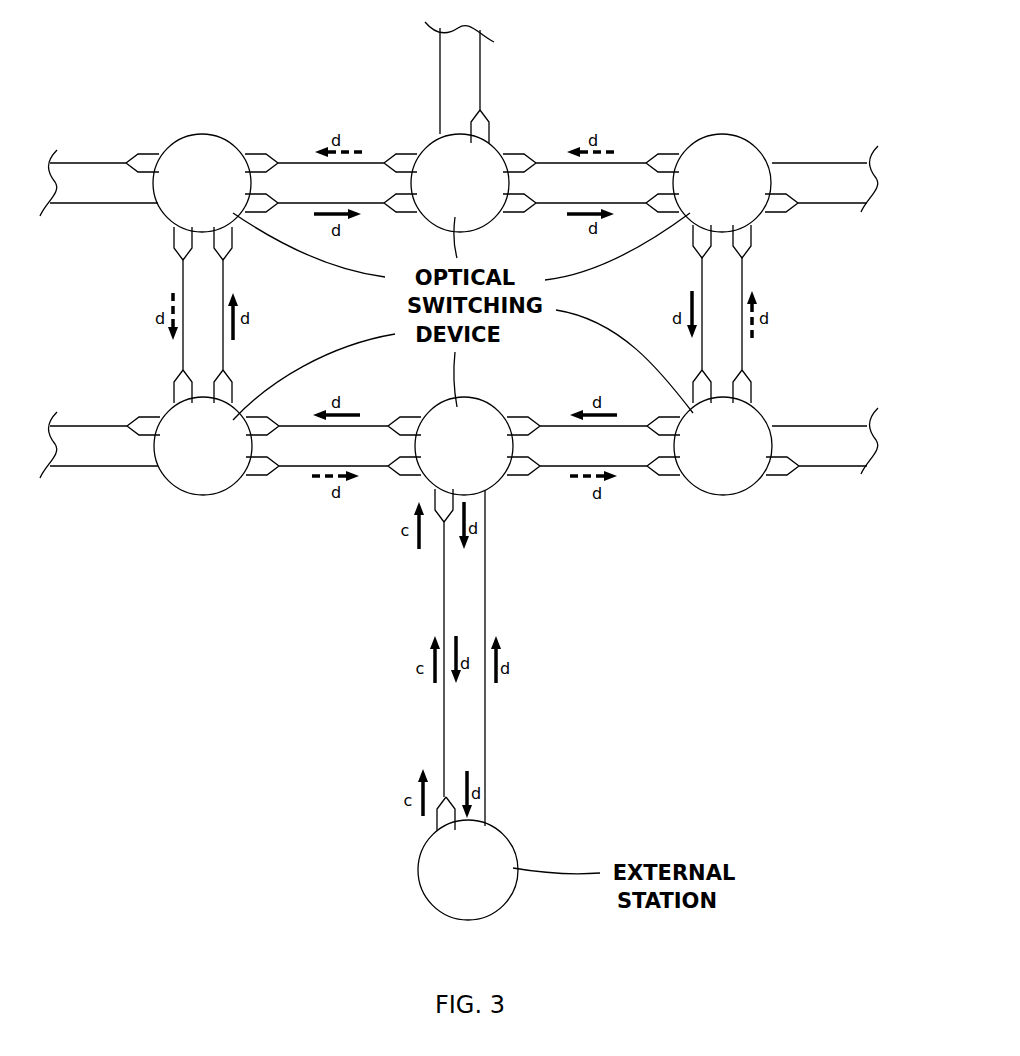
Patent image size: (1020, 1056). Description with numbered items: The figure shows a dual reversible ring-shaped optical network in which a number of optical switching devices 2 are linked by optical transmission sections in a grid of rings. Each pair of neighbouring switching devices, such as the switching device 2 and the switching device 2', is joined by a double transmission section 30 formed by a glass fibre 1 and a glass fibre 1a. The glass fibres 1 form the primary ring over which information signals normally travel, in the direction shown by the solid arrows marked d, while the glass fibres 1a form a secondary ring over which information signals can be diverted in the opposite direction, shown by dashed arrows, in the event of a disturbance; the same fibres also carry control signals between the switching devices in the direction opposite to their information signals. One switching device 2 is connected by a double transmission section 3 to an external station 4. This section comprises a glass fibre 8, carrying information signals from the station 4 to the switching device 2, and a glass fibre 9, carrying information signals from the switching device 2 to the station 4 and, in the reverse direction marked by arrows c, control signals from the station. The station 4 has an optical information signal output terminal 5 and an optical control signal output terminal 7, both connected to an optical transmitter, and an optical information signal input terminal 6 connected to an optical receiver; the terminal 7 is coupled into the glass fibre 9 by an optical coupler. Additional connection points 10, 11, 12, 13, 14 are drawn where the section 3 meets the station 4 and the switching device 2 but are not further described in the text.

The glass fibre 1 is at (363, 207).
The glass fibre 1a is at (361, 163).
The optical switching device 2 is at (462, 314).
The optical switching device 2' is at (723, 446).
The double transmission section 3 is at (465, 658).
The external station 4 is at (468, 870).
The optical information signal output terminal 5 is at (490, 823).
The optical information signal input terminal 6 is at (458, 818).
The optical control signal output terminal 7 is at (438, 829).
The glass fibre 8 is at (490, 725).
The glass fibre 9 is at (444, 725).
The optical coupler at external station 10 is at (449, 800).
The optical coupler at switching device 11 is at (444, 525).
The output port of switching device 12 is at (490, 490).
The port of switching device 13 is at (455, 497).
The input port of switching device 14 is at (433, 490).
The double transmission section 30 is at (587, 443).